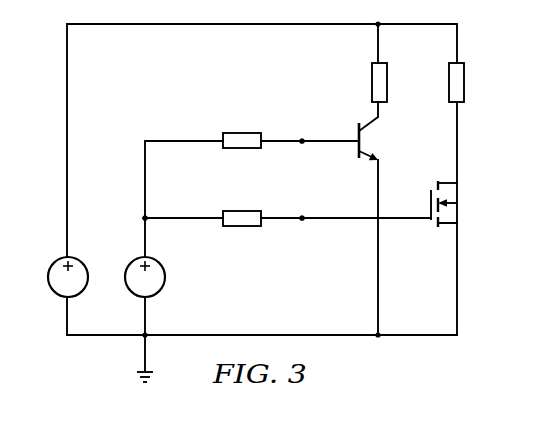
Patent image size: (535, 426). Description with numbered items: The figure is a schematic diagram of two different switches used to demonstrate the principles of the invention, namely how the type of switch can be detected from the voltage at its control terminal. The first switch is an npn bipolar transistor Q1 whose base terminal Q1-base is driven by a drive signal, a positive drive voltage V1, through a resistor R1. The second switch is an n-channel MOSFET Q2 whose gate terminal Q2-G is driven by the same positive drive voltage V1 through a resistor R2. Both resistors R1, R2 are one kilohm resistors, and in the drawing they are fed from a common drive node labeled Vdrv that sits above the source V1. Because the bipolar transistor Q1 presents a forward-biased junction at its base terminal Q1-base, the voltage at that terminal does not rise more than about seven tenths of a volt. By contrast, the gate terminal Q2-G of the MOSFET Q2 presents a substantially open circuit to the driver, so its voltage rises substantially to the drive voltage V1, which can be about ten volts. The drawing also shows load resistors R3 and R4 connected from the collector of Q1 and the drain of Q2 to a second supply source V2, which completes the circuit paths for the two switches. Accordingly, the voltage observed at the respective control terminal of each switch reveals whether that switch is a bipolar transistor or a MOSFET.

The resistor R1 is at (242, 130).
The resistor R2 is at (242, 209).
The resistor R3 (collector load) R3 is at (392, 82).
The resistor R4 (drain load) R4 is at (469, 82).
The npn bipolar transistor Q1 is at (375, 138).
The n-channel MOSFET Q2 is at (456, 204).
The positive drive voltage V1 is at (156, 277).
The supply voltage source V2 is at (55, 277).
The drive voltage node Vdrv is at (168, 206).
The base terminal Q1-base is at (324, 125).
The gate terminal Q2-G is at (324, 202).